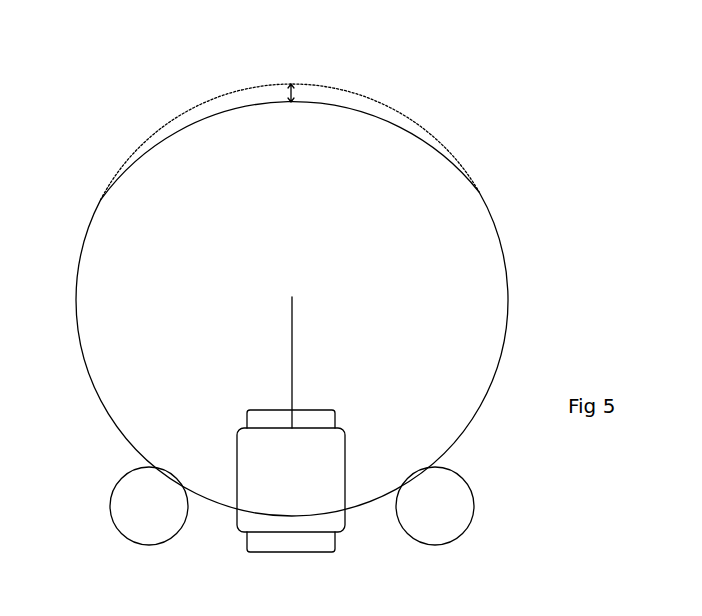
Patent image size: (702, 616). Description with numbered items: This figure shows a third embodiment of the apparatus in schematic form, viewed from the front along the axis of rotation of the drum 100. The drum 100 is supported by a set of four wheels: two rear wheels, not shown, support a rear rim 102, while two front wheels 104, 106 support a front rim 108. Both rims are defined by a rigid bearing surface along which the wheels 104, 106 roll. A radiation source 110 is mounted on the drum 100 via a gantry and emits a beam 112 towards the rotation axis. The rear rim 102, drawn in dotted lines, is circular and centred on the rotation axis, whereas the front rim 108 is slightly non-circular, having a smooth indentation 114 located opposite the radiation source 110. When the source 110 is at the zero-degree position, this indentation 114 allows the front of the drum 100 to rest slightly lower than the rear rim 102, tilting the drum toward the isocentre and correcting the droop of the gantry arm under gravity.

The drum 100 is at (480, 290).
The rear rim 102 is at (363, 92).
The front wheel 104 is at (142, 498).
The front wheel 106 is at (440, 513).
The front rim 108 is at (180, 131).
The radiation source 110 is at (318, 500).
The beam 112 is at (296, 350).
The indentation 114 is at (283, 87).